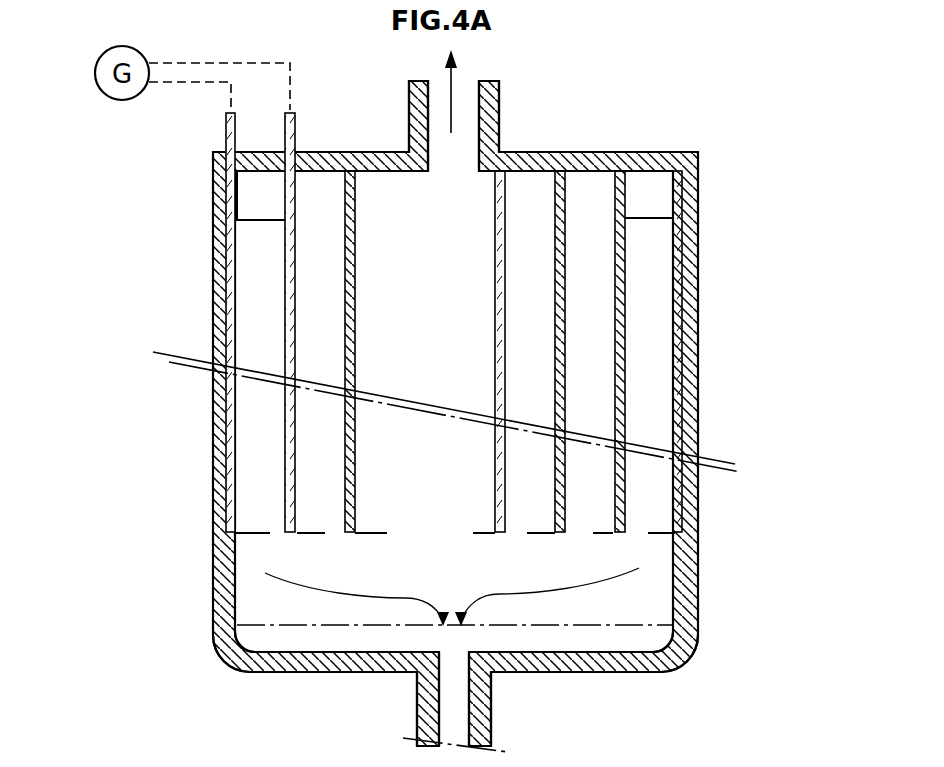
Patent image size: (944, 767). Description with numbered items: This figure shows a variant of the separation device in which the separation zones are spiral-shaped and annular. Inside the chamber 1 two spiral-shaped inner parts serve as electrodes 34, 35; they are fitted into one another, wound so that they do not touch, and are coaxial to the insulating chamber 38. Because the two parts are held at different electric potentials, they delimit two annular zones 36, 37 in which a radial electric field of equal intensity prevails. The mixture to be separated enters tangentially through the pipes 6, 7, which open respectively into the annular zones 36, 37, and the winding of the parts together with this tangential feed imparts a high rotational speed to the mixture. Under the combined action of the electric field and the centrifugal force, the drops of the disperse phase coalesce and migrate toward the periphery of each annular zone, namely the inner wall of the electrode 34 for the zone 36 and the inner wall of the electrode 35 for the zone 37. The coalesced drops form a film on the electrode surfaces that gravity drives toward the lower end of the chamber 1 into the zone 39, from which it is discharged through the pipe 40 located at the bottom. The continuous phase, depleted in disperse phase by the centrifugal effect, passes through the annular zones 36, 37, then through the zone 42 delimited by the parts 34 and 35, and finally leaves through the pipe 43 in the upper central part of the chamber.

The chamber 1 is at (784, 248).
The pipe 6 is at (647, 190).
The pipe 7 is at (253, 195).
The electrode 34 is at (285, 274).
The electrode 35 is at (230, 310).
The annular zone 36 is at (320, 428).
The annular zone 37 is at (262, 457).
The insulating chamber 38 is at (688, 633).
The zone 39 is at (365, 620).
The pipe 40 is at (453, 711).
The zone 42 is at (423, 473).
The pipe 43 is at (488, 98).